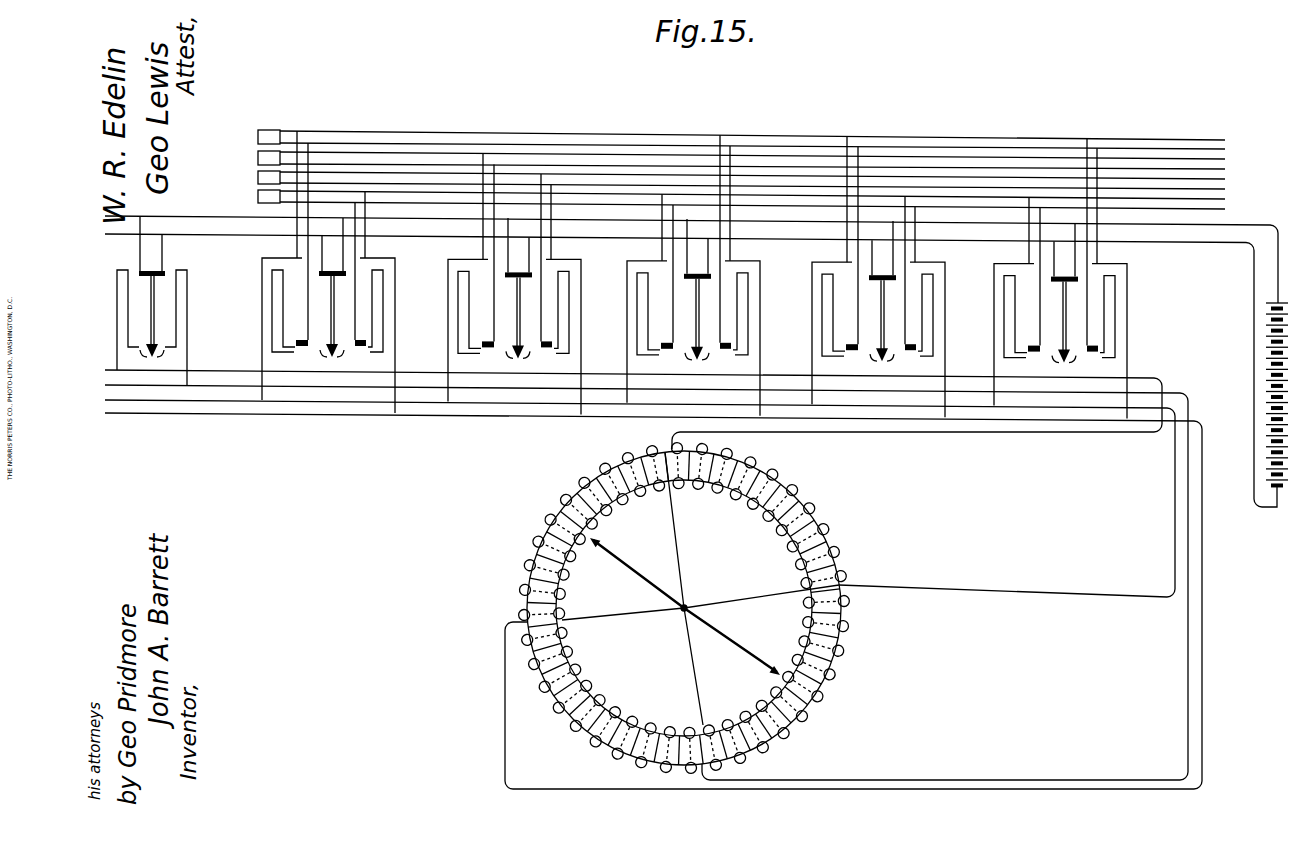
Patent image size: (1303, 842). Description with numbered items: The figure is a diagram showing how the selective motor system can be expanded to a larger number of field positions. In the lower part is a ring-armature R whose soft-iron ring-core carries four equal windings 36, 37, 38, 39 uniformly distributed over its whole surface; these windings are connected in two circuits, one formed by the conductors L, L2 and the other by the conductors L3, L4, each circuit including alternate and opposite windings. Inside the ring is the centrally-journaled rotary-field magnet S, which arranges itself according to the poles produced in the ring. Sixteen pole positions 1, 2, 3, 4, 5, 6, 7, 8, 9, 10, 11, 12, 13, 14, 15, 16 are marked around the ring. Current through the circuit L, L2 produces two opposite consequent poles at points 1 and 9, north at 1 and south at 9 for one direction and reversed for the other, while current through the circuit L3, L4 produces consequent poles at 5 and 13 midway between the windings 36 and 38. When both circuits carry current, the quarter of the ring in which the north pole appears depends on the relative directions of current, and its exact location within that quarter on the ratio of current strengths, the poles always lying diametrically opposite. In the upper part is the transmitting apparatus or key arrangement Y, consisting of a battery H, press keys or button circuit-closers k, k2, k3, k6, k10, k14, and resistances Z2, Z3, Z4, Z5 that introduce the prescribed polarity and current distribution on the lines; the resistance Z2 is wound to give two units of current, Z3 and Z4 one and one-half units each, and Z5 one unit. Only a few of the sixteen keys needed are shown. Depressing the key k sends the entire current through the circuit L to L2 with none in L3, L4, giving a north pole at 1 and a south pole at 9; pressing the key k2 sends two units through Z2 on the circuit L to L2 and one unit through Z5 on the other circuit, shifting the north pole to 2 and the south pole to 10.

The key arrangement Y is at (691, 307).
The resistance Z2 is at (725, 139).
The resistance Z3 is at (725, 159).
The resistance Z4 is at (725, 178).
The resistance Z5 is at (725, 197).
The press key k is at (152, 300).
The press key k2 is at (328, 272).
The press key k3 is at (514, 284).
The press key k6 is at (693, 275).
The press key k10 is at (878, 276).
The press key k14 is at (1060, 279).
The battery H is at (1255, 346).
The line circuit conductor L is at (633, 413).
The line circuit conductor L2 is at (646, 584).
The line circuit conductor L3 is at (640, 510).
The line circuit conductor L4 is at (871, 793).
The ring-armature R is at (684, 608).
The rotary-field magnet S is at (685, 606).
The pole point 1 is at (584, 536).
The pole point 2 is at (621, 508).
The pole point 3 is at (661, 492).
The pole point 4 is at (713, 497).
The pole point 5 is at (754, 516).
The pole point 6 is at (786, 549).
The pole point 7 is at (801, 585).
The pole point 8 is at (801, 634).
The pole point 9 is at (780, 678).
The pole point 10 is at (749, 708).
The pole point 11 is at (710, 725).
The pole point 12 is at (659, 723).
The pole point 13 is at (615, 707).
The pole point 14 is at (584, 668).
The pole point 15 is at (568, 618).
The pole point 16 is at (574, 577).
The ring winding 36 is at (538, 502).
The ring winding 37 is at (806, 480).
The ring winding 38 is at (853, 670).
The ring winding 39 is at (571, 743).